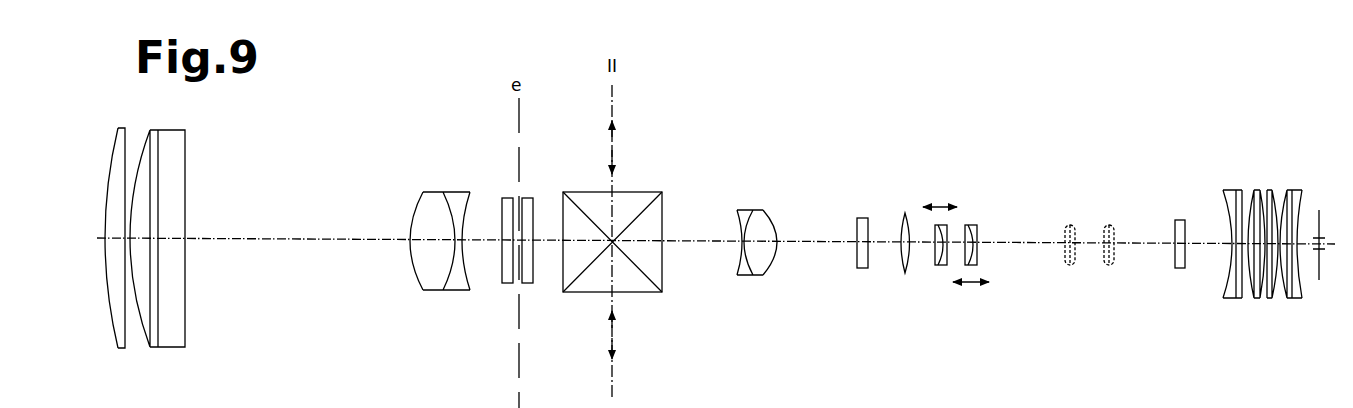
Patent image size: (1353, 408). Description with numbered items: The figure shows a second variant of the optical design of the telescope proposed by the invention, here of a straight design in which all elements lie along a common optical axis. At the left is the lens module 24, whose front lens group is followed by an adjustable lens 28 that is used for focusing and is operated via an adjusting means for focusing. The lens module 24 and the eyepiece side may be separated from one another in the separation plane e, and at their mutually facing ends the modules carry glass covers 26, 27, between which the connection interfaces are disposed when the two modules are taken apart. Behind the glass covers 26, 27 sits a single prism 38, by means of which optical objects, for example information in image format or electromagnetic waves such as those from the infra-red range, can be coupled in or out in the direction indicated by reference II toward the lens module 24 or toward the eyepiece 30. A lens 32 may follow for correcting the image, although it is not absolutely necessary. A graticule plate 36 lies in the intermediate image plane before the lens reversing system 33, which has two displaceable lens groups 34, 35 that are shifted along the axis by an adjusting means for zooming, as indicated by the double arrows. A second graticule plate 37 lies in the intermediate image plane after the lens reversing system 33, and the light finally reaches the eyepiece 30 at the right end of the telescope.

The lens module 24 is at (351, 198).
The glass cover 26 is at (507, 285).
The glass cover 27 is at (527, 198).
The adjustable lens 28 is at (423, 270).
The eyepiece 30 is at (1264, 165).
The lens 32 is at (760, 267).
The lens reversing system 33 is at (1051, 200).
The displaceable lens group 34 is at (982, 206).
The displaceable lens group 35 is at (934, 283).
The graticule plate 36 is at (863, 267).
The graticule plate 37 is at (1182, 268).
The prism 38 is at (643, 178).